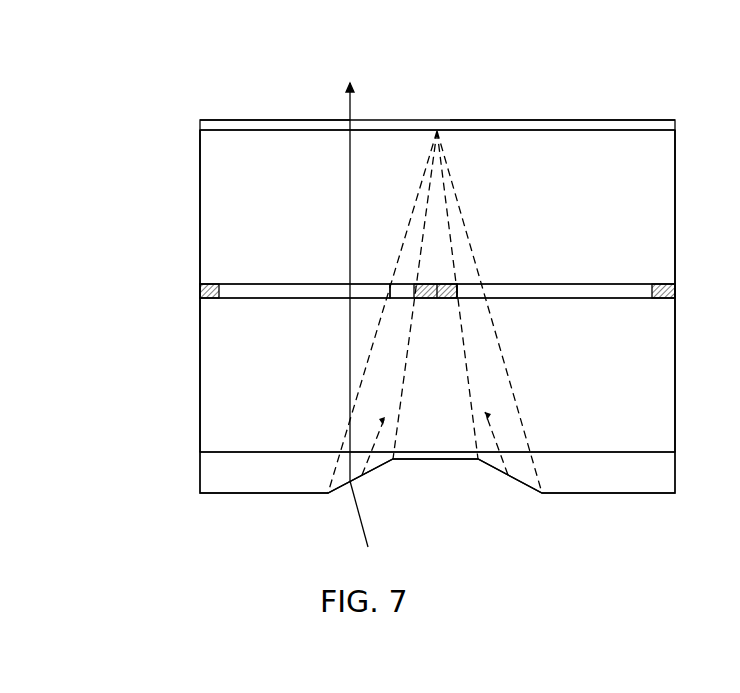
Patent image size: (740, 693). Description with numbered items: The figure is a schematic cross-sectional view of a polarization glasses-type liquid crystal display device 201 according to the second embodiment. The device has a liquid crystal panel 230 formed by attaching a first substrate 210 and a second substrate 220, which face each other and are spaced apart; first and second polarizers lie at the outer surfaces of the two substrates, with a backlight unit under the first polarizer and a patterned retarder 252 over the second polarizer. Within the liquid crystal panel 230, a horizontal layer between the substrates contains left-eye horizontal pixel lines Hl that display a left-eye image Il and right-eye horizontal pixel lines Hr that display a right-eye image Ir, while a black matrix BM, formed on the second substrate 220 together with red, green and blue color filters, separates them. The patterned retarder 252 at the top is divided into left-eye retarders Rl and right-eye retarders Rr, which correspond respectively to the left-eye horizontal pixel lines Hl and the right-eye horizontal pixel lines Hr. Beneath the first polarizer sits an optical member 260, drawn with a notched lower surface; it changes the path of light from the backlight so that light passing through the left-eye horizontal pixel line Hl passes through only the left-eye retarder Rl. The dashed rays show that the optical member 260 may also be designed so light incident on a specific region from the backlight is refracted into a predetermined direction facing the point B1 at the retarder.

The polarization glasses-type liquid crystal display device 201 is at (540, 43).
The patterned retarder 252 is at (196, 120).
The right-eye retarder Rr is at (278, 120).
The left-eye retarder Rl is at (564, 120).
The liquid crystal panel 230 is at (122, 253).
The second substrate 220 is at (232, 252).
The first substrate 210 is at (232, 383).
The optical member 260 is at (232, 470).
The right-eye horizontal pixel line Hr is at (292, 284).
The left-eye horizontal pixel line Hl is at (565, 284).
The black matrix BM is at (437, 298).
The point B1 is at (437, 130).
The right-eye image Ir is at (378, 429).
The left-eye image Il is at (491, 429).